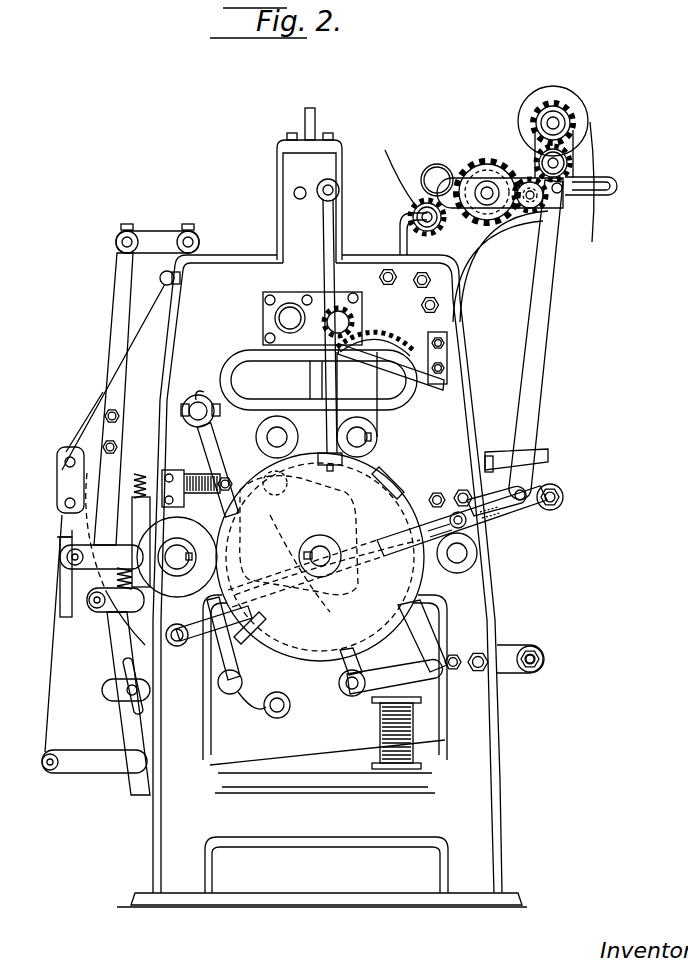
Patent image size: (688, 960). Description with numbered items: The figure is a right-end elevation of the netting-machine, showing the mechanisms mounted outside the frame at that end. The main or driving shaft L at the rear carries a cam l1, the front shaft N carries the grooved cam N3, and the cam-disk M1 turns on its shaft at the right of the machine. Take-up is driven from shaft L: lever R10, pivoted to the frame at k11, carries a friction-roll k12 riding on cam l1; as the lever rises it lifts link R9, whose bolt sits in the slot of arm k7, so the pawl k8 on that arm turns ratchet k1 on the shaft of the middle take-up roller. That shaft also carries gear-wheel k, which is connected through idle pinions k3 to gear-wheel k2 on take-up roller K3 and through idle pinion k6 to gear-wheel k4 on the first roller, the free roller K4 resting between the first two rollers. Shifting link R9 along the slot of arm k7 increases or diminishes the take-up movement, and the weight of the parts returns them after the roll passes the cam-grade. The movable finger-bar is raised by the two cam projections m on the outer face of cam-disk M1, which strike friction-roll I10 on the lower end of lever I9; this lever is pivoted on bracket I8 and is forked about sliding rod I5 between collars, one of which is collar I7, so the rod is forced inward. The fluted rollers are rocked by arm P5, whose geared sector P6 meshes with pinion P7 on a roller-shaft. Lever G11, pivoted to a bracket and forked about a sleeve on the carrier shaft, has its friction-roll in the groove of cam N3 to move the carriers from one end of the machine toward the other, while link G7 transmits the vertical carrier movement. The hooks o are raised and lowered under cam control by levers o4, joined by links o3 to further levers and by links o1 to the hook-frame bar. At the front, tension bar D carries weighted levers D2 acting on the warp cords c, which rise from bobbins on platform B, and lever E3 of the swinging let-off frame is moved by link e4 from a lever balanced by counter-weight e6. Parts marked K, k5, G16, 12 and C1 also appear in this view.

The warp cords or threads c is at (45, 672).
The take-up roller K3 is at (551, 95).
The gear-wheel k2 is at (620, 90).
The idle-wheels or pinions k3 is at (632, 157).
The arm or lever k7 is at (652, 188).
The link R9 is at (540, 397).
The loose or free roller K4 is at (438, 161).
The ratchet wheel K is at (448, 149).
The pawl k8 is at (404, 148).
The collar I7 is at (341, 190).
The gear-wheel k4 is at (404, 200).
The idle-wheel or pinion k6 is at (462, 248).
The ratchet k1 is at (488, 222).
The pin k5 is at (528, 210).
The gear-wheel k is at (506, 240).
The pinion P7 is at (356, 313).
The geared sector P6 is at (390, 334).
The bracket I8 is at (443, 388).
The arm P5 is at (385, 394).
The lever I9 is at (329, 281).
The rod or bar I5 is at (330, 450).
The friction-roll I10 is at (345, 460).
The friction-roll k12 is at (449, 492).
The levers o4 is at (538, 511).
The lever R10 is at (482, 534).
The cam l1 is at (478, 542).
The main or driving shaft L is at (459, 565).
The cam-disk M1 is at (268, 541).
The cam projections m is at (393, 488).
The cam N3 is at (177, 557).
The shaft N is at (180, 563).
The bar G16 is at (165, 237).
The link G7 is at (114, 320).
The bar D is at (86, 532).
The weighted lever D2 is at (66, 594).
The lever E3 is at (122, 650).
The lever G11 is at (211, 456).
The ring 12 is at (200, 406).
The pivot k11 is at (177, 646).
The hooks o is at (228, 658).
The links e4 is at (213, 687).
The counter-weight e6 is at (264, 705).
The link o1 is at (343, 676).
The link o3 is at (405, 625).
The electromagnet C prime C1 is at (376, 710).
The platform B is at (328, 776).